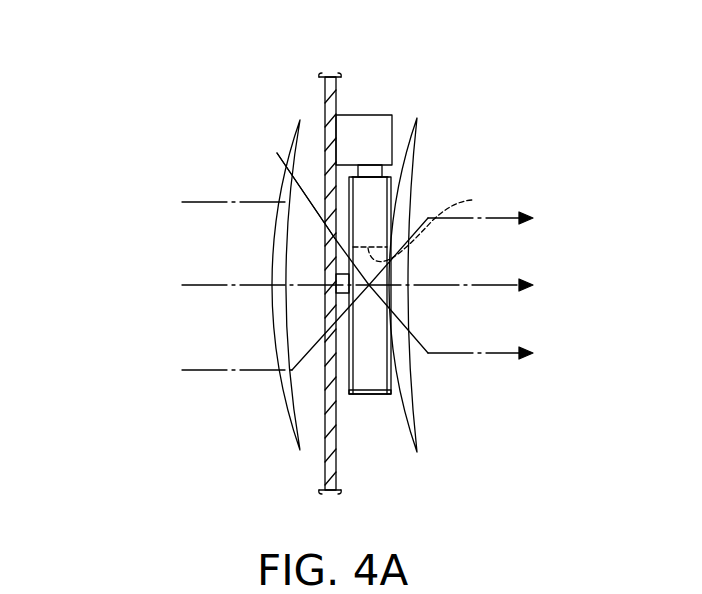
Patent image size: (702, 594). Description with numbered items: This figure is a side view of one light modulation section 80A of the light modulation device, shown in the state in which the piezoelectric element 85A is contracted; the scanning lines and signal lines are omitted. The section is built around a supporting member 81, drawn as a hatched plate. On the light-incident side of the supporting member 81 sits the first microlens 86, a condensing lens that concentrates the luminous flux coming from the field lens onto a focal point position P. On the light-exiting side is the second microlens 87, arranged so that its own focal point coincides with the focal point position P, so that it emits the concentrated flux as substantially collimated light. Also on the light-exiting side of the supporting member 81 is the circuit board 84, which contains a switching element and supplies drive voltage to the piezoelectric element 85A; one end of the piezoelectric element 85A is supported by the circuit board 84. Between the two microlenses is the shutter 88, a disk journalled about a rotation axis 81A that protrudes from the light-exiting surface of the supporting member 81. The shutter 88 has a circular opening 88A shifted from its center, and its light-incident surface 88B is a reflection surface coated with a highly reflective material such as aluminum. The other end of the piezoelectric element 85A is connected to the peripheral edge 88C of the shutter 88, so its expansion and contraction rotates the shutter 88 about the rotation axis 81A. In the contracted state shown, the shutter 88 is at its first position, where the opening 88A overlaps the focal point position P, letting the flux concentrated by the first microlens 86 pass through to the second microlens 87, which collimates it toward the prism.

The light modulation section 80A is at (148, 67).
The supporting member 81 is at (323, 90).
The rotation axis 81A is at (277, 152).
The circuit board 84 is at (368, 127).
The piezoelectric element 85A is at (369, 172).
The first microlens 86 is at (293, 428).
The second microlens 87 is at (420, 427).
The shutter 88 is at (378, 386).
The opening 88A is at (444, 223).
The surface 88B is at (349, 393).
The peripheral edge 88C is at (388, 176).
The focal point position P is at (369, 287).